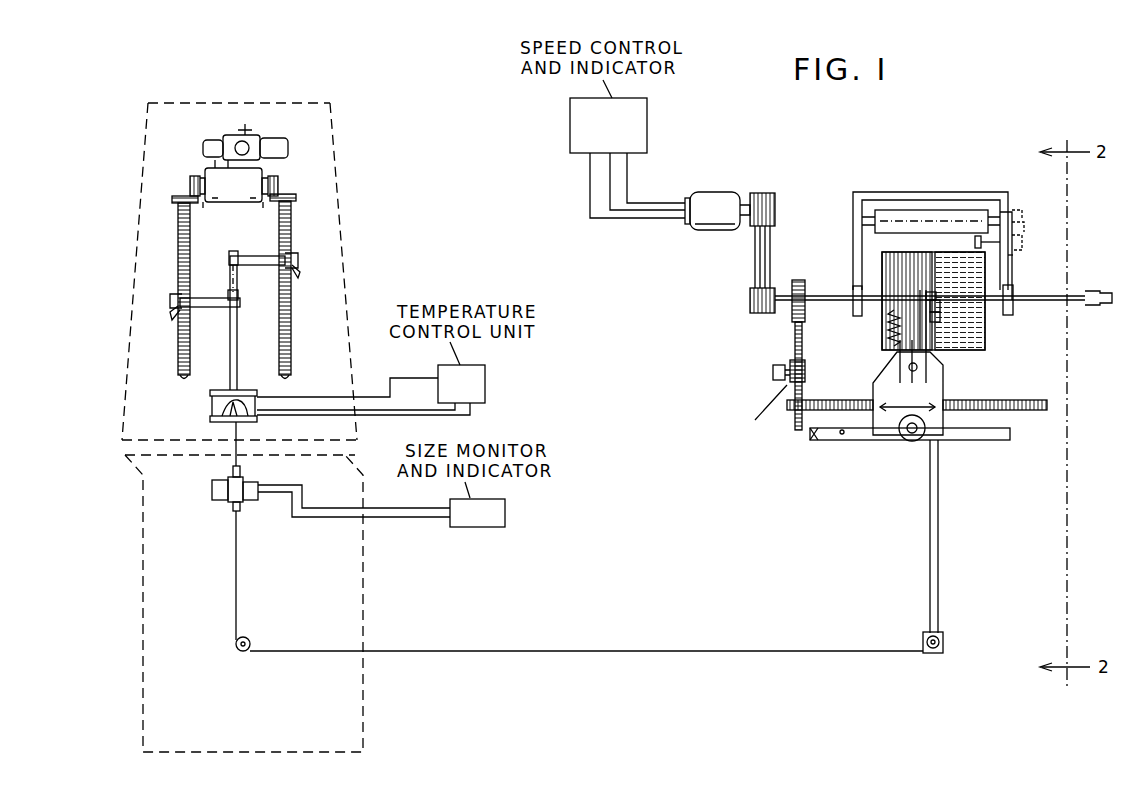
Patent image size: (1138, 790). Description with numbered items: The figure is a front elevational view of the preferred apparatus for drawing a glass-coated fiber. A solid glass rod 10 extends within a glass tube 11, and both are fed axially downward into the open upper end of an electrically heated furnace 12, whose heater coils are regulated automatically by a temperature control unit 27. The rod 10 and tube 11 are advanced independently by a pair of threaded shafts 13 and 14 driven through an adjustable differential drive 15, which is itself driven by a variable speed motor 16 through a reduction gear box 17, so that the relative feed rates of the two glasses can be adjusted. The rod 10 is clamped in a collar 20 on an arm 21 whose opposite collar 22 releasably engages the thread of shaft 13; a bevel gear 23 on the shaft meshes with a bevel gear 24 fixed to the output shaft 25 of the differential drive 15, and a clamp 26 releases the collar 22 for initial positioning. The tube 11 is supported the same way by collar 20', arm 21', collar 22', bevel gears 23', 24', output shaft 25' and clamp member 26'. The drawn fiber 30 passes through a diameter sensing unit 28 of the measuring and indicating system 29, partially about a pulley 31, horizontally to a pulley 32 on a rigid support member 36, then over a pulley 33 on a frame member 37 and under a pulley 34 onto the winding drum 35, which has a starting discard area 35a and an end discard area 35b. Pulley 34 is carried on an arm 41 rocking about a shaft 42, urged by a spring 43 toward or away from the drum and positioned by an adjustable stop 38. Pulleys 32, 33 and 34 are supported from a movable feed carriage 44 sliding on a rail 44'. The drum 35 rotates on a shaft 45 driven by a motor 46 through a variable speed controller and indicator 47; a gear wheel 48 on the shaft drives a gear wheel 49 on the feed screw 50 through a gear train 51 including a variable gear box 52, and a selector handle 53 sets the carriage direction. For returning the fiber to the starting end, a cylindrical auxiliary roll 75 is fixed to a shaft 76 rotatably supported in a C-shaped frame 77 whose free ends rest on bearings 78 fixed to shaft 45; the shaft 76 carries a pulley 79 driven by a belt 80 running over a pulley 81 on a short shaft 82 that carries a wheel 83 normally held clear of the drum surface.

The solid glass rod 10 is at (229, 274).
The glass tube 11 is at (231, 346).
The electrically heated furnace 12 is at (222, 403).
The threaded shaft 13 is at (291, 335).
The threaded shaft 14 is at (180, 350).
The adjustable differential drive 15 is at (246, 194).
The variable speed motor 16 is at (272, 148).
The reduction gear box 17 is at (238, 140).
The collar 20 is at (218, 248).
The collar 20' is at (253, 288).
The arm 21 is at (257, 246).
The arm 21' is at (210, 319).
The collar 22 is at (309, 249).
The collar 22' is at (161, 294).
The bevel gear 23 is at (298, 187).
The bevel gear 23' is at (170, 188).
The bevel gear 24 is at (289, 175).
The bevel gear 24' is at (178, 175).
The output shaft 25 is at (261, 216).
The output shaft 25' is at (208, 216).
The clamp 26 is at (313, 264).
The clamp member 26' is at (159, 320).
The temperature control unit 27 is at (480, 390).
The diameter sensing unit 28 is at (232, 490).
The fiber diameter measuring and indicating system 29 is at (505, 514).
The fiber 30 is at (236, 605).
The pulley 31 is at (250, 638).
The pulley 32 is at (925, 640).
The pulley 33 is at (940, 315).
The pulley 34 is at (940, 303).
The winding drum 35 is at (985, 340).
The starting discard area 35a is at (885, 262).
The end discard area 35b is at (985, 322).
The rigid support member 36 is at (928, 530).
The frame member 37 is at (925, 355).
The pivot 38 is at (940, 360).
The arm 41 is at (920, 298).
The shaft 42 is at (935, 292).
The spring 43 is at (888, 326).
The feed carriage 44 is at (942, 396).
The rail 44' is at (801, 450).
The shaft 45 is at (1070, 295).
The motor 46 is at (715, 195).
The variable speed controller and indicator 47 is at (640, 127).
The gear wheel 48 is at (802, 282).
The gear wheel 49 is at (790, 420).
The feed screw 50 is at (830, 400).
The gear train 51 is at (802, 360).
The variable gear box 52 is at (806, 372).
The selector handle 53 is at (862, 440).
The cylindrical auxiliary roll 75 is at (945, 228).
The shaft 76 is at (1005, 205).
The C-shaped frame 77 is at (925, 192).
The bearings 78 is at (855, 308).
The pulley 79 is at (1025, 214).
The belt 80 is at (1028, 226).
The pulley 81 is at (1028, 242).
The short shaft 82 is at (1012, 256).
The wheel 83 is at (975, 242).